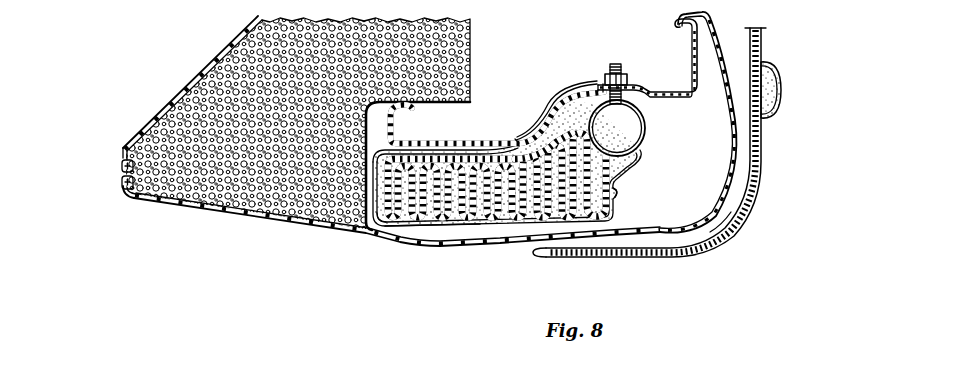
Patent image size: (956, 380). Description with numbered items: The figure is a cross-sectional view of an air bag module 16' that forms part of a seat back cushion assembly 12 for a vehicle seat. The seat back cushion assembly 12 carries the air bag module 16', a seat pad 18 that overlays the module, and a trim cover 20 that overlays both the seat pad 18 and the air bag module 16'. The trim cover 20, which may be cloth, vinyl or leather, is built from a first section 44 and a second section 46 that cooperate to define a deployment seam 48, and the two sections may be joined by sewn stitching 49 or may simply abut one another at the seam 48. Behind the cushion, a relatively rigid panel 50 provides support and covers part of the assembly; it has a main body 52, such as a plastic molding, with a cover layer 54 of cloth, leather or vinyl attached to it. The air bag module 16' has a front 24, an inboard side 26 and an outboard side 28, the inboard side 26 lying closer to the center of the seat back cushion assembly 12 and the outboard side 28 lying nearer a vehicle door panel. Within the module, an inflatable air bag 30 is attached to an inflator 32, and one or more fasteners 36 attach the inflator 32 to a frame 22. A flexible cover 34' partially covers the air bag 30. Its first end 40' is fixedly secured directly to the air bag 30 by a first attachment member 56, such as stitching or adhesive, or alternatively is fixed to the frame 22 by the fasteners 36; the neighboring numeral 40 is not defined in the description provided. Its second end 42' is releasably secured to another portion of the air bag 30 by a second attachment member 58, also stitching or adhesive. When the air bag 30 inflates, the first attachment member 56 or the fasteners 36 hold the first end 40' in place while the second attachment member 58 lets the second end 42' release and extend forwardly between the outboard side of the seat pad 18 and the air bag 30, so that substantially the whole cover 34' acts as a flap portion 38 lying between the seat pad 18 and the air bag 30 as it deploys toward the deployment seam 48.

The seat back cushion assembly 12 is at (95, 82).
The air bag module 16' is at (706, 120).
The seat pad 18 is at (243, 137).
The trim cover 20 is at (146, 220).
The frame 22 is at (693, 78).
The front 24 is at (360, 185).
The inboard side 26 is at (463, 139).
The outboard side 28 is at (453, 252).
The inflatable air bag 30 is at (616, 184).
The inflator 32 is at (605, 139).
The cover 34' is at (353, 250).
The fasteners 36 is at (620, 67).
The flap portion 38 is at (403, 233).
The upper panel 40 is at (556, 88).
The first end 40' is at (517, 102).
The second end 42' is at (598, 269).
The first section 44 is at (205, 62).
The second section 46 is at (257, 231).
The deployment seam 48 is at (108, 178).
The sewn stitching 49 is at (123, 165).
The panel 50 is at (748, 210).
The main body 52 is at (726, 230).
The cover layer 54 is at (763, 137).
The first attachment member 56 is at (602, 86).
The second releasable attachment member 58 is at (616, 193).